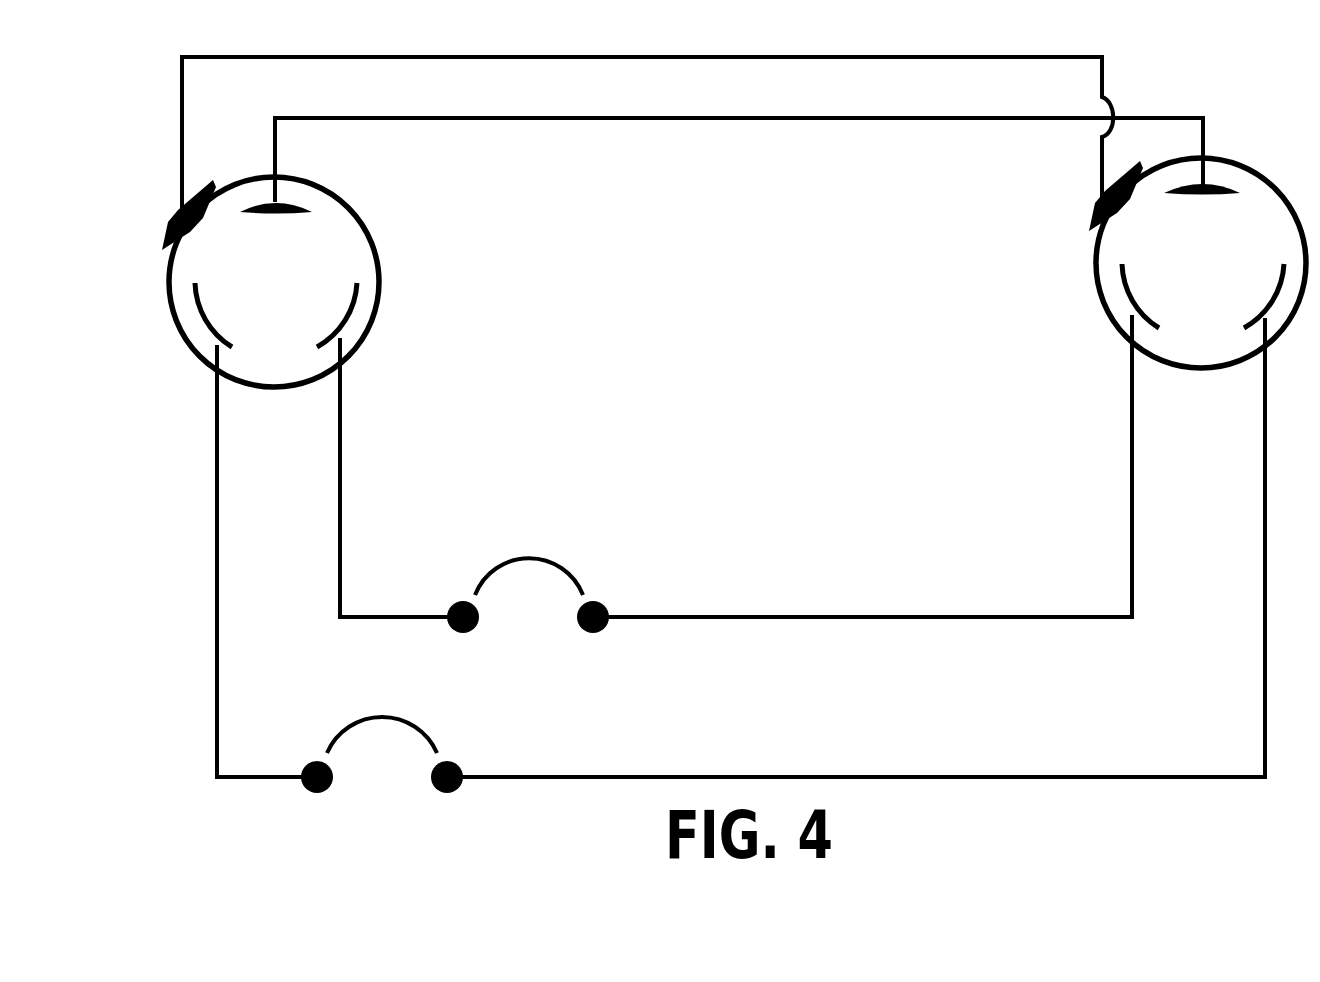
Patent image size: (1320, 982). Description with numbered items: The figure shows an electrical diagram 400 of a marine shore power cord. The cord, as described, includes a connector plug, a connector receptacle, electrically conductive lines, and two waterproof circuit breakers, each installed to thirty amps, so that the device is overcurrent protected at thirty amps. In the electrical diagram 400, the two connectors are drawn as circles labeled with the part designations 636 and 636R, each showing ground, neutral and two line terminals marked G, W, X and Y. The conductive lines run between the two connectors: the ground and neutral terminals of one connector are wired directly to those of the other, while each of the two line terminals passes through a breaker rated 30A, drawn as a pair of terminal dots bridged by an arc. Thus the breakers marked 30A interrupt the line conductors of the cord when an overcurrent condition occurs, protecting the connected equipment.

The electrical diagram 400 is at (381, 41).
The 30 amp circuit breaker 30A is at (455, 656).
The C5 636/65 connector 636 is at (270, 282).
The C5 636/65R connector 636R is at (1197, 263).